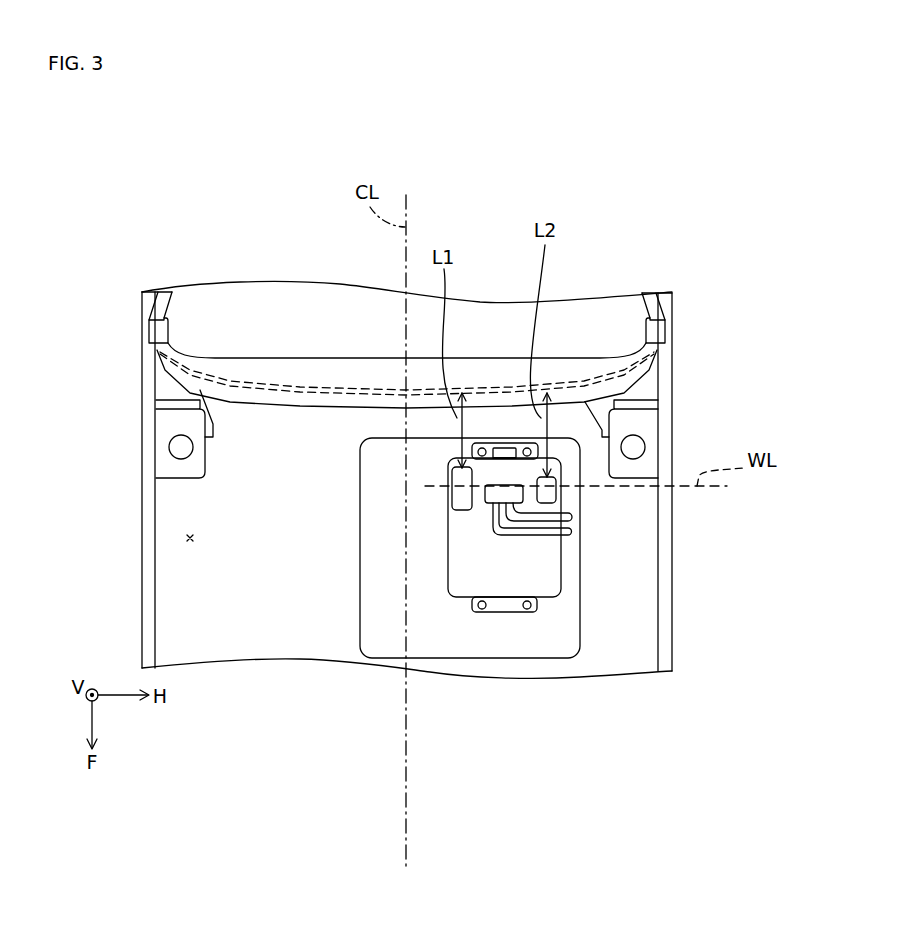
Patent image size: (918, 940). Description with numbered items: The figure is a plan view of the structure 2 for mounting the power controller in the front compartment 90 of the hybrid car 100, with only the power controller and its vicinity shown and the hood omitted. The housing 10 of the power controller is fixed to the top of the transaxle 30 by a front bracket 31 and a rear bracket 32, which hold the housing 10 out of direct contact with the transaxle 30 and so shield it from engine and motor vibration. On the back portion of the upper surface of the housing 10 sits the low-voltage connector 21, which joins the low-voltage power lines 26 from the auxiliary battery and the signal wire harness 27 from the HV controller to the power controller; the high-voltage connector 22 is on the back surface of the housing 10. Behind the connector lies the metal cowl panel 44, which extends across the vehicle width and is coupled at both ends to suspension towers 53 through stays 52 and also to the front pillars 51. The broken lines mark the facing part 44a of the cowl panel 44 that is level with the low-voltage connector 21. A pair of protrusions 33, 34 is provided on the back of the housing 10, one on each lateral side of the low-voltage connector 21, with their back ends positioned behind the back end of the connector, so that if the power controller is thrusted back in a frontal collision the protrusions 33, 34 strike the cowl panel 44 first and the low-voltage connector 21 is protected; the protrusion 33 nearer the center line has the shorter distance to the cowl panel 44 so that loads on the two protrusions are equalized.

The structure for mounting the power controller 2 is at (237, 185).
The hybrid car 100 is at (238, 300).
The front pillar 51 is at (155, 330).
The cowl panel 44 is at (177, 383).
The facing part 44a is at (577, 380).
The stay 52 is at (177, 400).
The suspension tower 53 is at (173, 463).
The front compartment 90 is at (186, 538).
The transaxle 30 is at (385, 637).
The housing 10 is at (548, 577).
The rear bracket 32 is at (493, 445).
The high-voltage connector 22 is at (505, 452).
The front bracket 31 is at (503, 603).
The protrusion 33 is at (458, 500).
The protrusion 34 is at (550, 492).
The low-voltage connector 21 is at (497, 498).
The low-voltage power lines 26 is at (570, 517).
The signal wire harness 27 is at (570, 532).